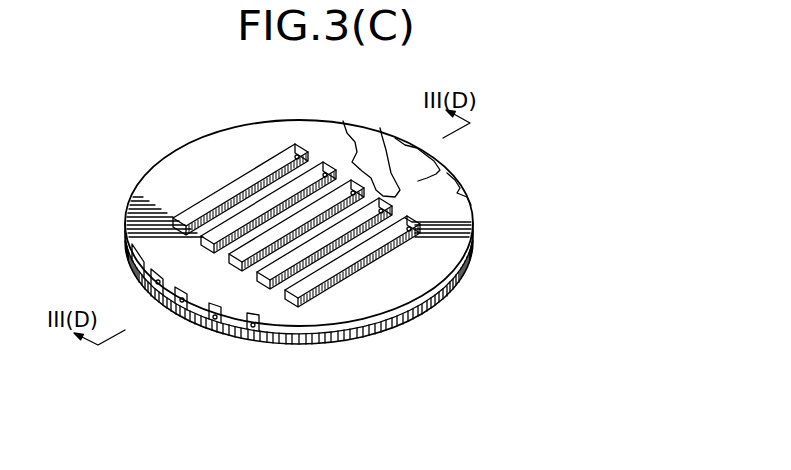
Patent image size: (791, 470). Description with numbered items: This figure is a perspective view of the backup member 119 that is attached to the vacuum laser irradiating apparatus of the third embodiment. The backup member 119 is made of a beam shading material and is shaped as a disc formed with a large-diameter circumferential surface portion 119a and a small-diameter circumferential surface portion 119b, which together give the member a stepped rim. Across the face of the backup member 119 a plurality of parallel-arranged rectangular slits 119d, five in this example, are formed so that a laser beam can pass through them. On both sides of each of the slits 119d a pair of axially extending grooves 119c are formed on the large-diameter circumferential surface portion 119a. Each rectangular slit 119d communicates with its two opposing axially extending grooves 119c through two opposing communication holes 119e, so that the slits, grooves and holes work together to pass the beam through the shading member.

The backup member 119 is at (478, 222).
The large-diameter circumferential surface portion 119a is at (430, 301).
The small-diameter circumferential surface portion 119b is at (397, 322).
The axially extending grooves 119c is at (152, 281).
The rectangular slits 119d is at (214, 212).
The communication holes 119e is at (353, 191).